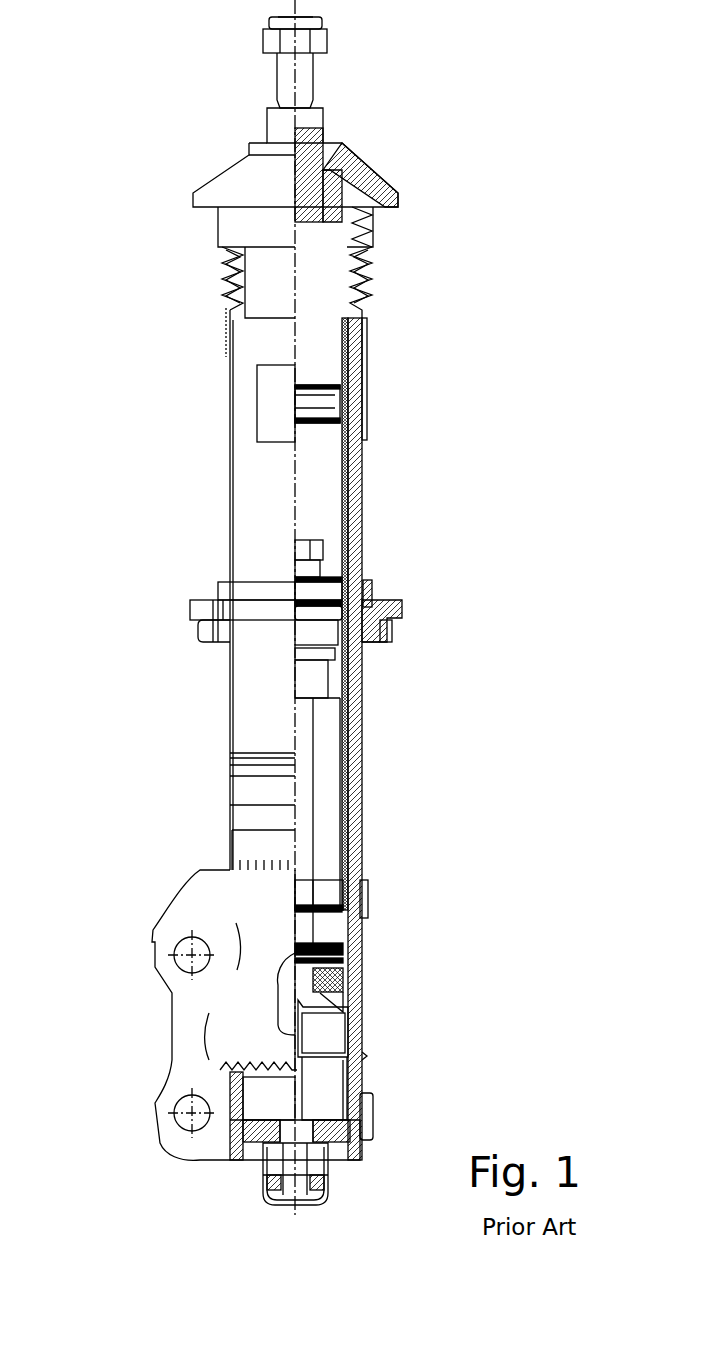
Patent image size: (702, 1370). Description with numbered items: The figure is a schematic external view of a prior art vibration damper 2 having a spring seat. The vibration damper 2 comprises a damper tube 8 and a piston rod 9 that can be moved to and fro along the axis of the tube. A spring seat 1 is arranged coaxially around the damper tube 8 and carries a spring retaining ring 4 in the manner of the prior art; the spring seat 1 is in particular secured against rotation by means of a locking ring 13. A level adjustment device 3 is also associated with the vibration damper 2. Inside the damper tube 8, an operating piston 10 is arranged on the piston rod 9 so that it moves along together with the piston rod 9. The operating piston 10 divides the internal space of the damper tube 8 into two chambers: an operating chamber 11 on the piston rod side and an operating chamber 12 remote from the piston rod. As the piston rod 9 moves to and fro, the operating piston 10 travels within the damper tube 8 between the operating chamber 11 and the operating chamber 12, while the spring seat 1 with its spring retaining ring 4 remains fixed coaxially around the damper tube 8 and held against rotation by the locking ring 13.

The spring seat 1 is at (183, 607).
The vibration damper 2 is at (128, 128).
The level adjustment device 3 is at (205, 504).
The spring retaining ring 4 is at (190, 594).
The damper tube 8 is at (358, 724).
The piston rod 9 is at (305, 851).
The operating piston 10 is at (335, 582).
The operating chamber on the piston rod side 11 is at (318, 788).
The operating chamber remote from the piston rod 12 is at (317, 487).
The locking ring 13 is at (205, 628).